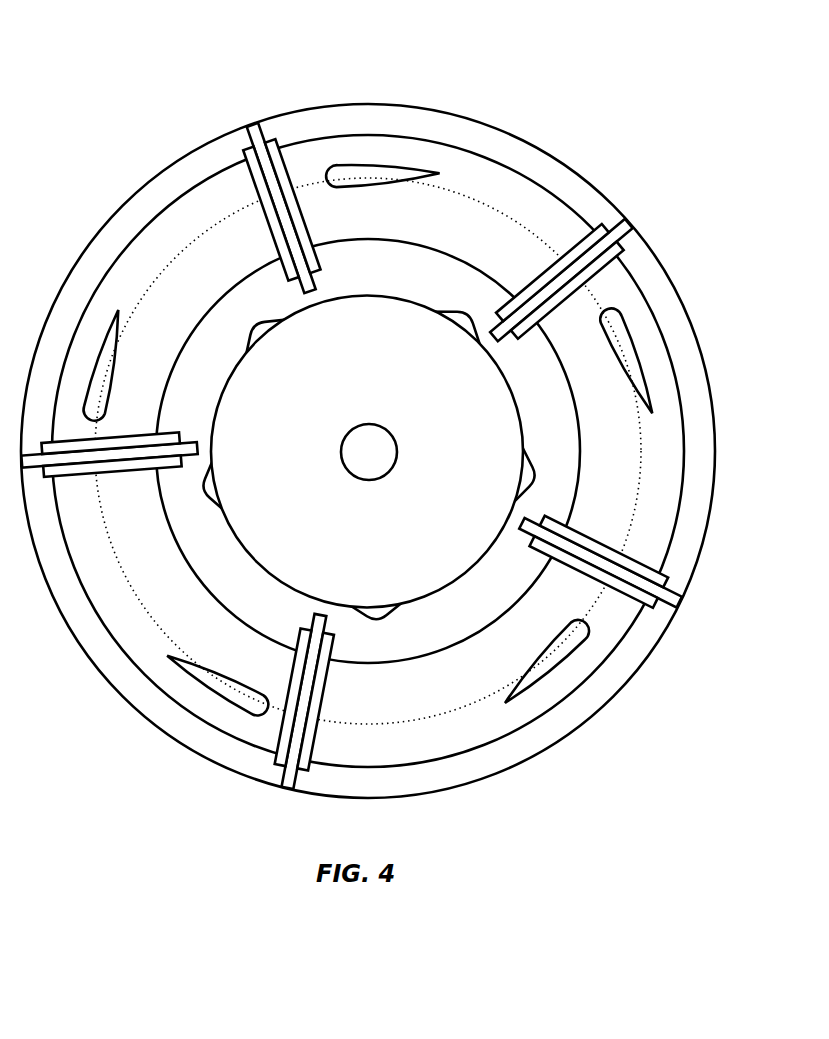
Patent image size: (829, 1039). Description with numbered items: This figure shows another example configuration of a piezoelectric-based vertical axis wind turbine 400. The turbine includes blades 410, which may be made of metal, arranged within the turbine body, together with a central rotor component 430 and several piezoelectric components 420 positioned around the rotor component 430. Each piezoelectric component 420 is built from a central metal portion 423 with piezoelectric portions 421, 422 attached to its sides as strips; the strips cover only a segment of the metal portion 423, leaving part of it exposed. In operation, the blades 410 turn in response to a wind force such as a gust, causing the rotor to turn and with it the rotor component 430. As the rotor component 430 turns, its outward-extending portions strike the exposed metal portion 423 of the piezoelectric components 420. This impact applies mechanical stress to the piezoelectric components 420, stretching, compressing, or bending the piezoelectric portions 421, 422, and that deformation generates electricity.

The piezoelectric-based vertical axis wind turbine 400 is at (133, 34).
The blades 410 is at (398, 165).
The piezoelectric components 420 is at (616, 257).
The piezoelectric portion 421 is at (552, 272).
The piezoelectric portion 422 is at (640, 259).
The metal portion 423 is at (561, 280).
The rotor component 430 is at (350, 300).